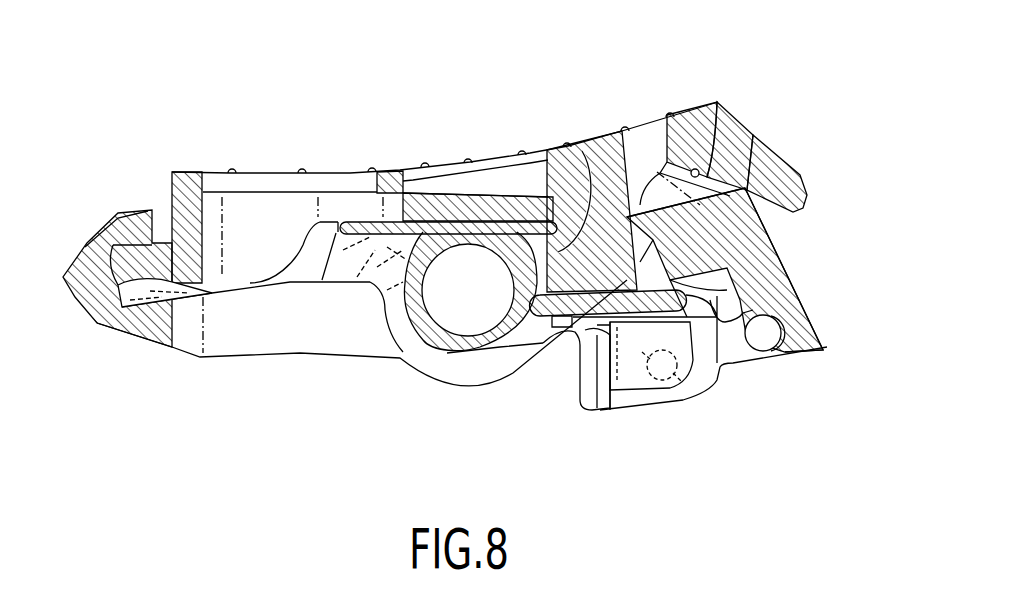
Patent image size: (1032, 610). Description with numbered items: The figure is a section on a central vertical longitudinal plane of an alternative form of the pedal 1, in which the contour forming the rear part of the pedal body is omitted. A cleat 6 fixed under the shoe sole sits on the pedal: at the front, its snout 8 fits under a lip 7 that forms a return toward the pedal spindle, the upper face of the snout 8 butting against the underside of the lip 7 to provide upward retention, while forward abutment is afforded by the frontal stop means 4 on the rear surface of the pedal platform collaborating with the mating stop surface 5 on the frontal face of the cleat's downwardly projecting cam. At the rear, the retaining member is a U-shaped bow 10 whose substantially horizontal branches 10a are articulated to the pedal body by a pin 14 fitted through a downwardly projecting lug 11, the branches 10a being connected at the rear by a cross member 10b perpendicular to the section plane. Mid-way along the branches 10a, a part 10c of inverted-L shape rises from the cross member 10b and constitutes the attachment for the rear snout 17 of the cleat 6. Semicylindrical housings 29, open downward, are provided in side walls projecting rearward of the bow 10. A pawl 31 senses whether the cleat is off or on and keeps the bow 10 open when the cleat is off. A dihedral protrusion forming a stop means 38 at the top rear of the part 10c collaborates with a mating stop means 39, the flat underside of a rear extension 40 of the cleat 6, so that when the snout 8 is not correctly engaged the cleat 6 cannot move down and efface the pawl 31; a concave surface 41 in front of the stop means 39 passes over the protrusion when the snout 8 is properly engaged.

The pedal 1 is at (326, 392).
The frontal stop means 4 is at (582, 150).
The mating stop surface 5 is at (538, 197).
The cleat 6 is at (602, 137).
The lip 7 is at (133, 223).
The snout 8 is at (137, 267).
The bow 10 is at (824, 360).
The branches 10a is at (738, 360).
The cross member 10b is at (780, 320).
The part rising upward 10c is at (780, 260).
The lug 11 is at (632, 422).
The pin 14 is at (672, 410).
The rear snout 17 is at (612, 330).
The semicylindrical housing 29 is at (733, 350).
The pawl 31 is at (590, 323).
The stop means 38 is at (760, 180).
The mating stop means 39 is at (790, 213).
The rear extension 40 is at (743, 143).
The concave surface 41 is at (718, 102).